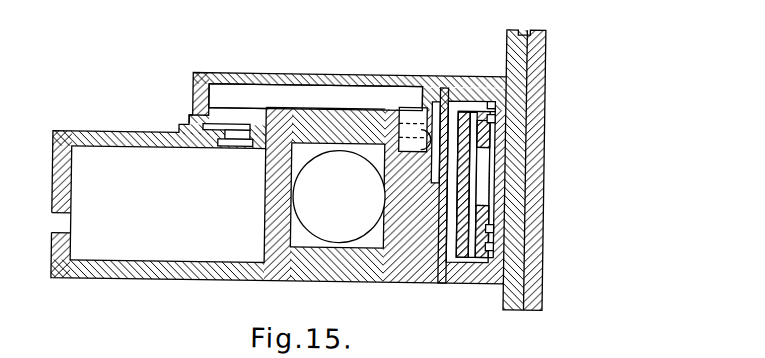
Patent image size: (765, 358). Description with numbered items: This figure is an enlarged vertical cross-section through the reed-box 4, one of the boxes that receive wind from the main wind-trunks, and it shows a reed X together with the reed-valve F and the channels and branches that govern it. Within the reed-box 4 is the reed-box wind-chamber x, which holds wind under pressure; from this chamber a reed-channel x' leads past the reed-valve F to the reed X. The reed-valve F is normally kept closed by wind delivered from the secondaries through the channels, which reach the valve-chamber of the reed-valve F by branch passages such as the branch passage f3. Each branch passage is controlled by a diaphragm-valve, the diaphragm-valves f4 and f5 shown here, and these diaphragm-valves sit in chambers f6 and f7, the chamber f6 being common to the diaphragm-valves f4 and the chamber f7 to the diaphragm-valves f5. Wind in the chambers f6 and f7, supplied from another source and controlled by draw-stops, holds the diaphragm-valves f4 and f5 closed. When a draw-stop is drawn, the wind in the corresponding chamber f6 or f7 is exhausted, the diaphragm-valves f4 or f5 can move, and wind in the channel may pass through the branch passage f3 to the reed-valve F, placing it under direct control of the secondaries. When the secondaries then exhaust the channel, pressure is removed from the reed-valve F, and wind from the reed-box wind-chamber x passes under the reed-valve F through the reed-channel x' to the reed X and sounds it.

The reed X is at (229, 124).
The reed-channel x' is at (316, 97).
The reed-box wind-chamber x is at (337, 195).
The reed-box 4 is at (338, 196).
The reed-valve F is at (448, 266).
The branch passage f3 is at (493, 297).
The diaphragm-valve f5 is at (495, 102).
The chamber f7 is at (495, 115).
The chamber f6 is at (495, 227).
The diaphragm-valve f4 is at (491, 244).